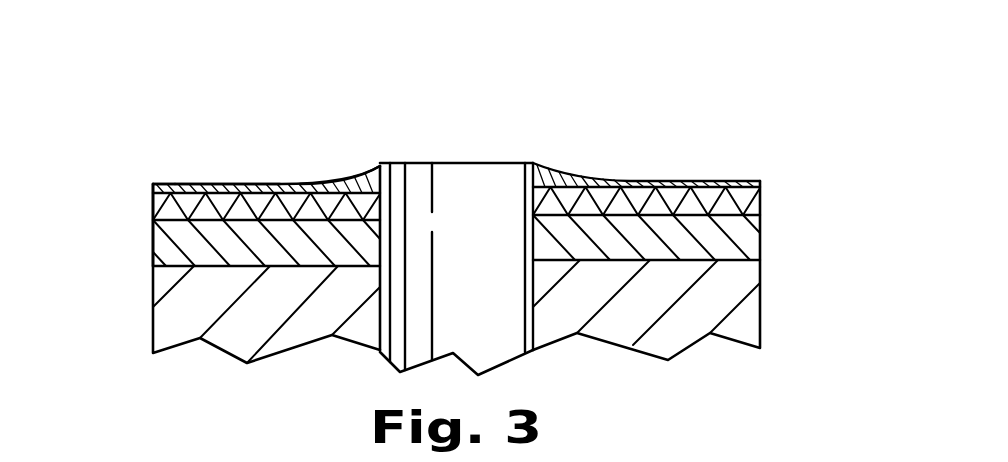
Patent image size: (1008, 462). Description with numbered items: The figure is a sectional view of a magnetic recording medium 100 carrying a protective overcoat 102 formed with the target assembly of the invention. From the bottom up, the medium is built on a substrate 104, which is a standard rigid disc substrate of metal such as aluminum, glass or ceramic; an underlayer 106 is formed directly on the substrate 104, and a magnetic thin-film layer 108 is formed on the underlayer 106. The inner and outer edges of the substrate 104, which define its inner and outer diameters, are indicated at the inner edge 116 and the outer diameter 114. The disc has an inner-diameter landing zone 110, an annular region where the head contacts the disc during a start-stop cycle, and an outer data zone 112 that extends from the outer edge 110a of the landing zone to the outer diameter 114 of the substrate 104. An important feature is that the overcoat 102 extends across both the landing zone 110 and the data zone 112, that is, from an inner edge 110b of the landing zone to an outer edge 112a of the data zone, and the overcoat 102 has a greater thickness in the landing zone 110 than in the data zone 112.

The magnetic recording medium 100 is at (186, 81).
The protective overcoat 102 is at (753, 181).
The substrate 104 is at (753, 292).
The underlayer 106 is at (750, 243).
The magnetic thin-film layer 108 is at (762, 198).
The inner-diameter landing zone 110 is at (349, 115).
The outer edge of the landing zone 110a is at (337, 180).
The inner edge of the landing zone 110b is at (380, 166).
The data zone 112 is at (264, 172).
The outer edge of the data zone 112a is at (153, 187).
The outer diameter of the substrate 114 is at (153, 186).
The inner edge of the substrate 116 is at (388, 167).